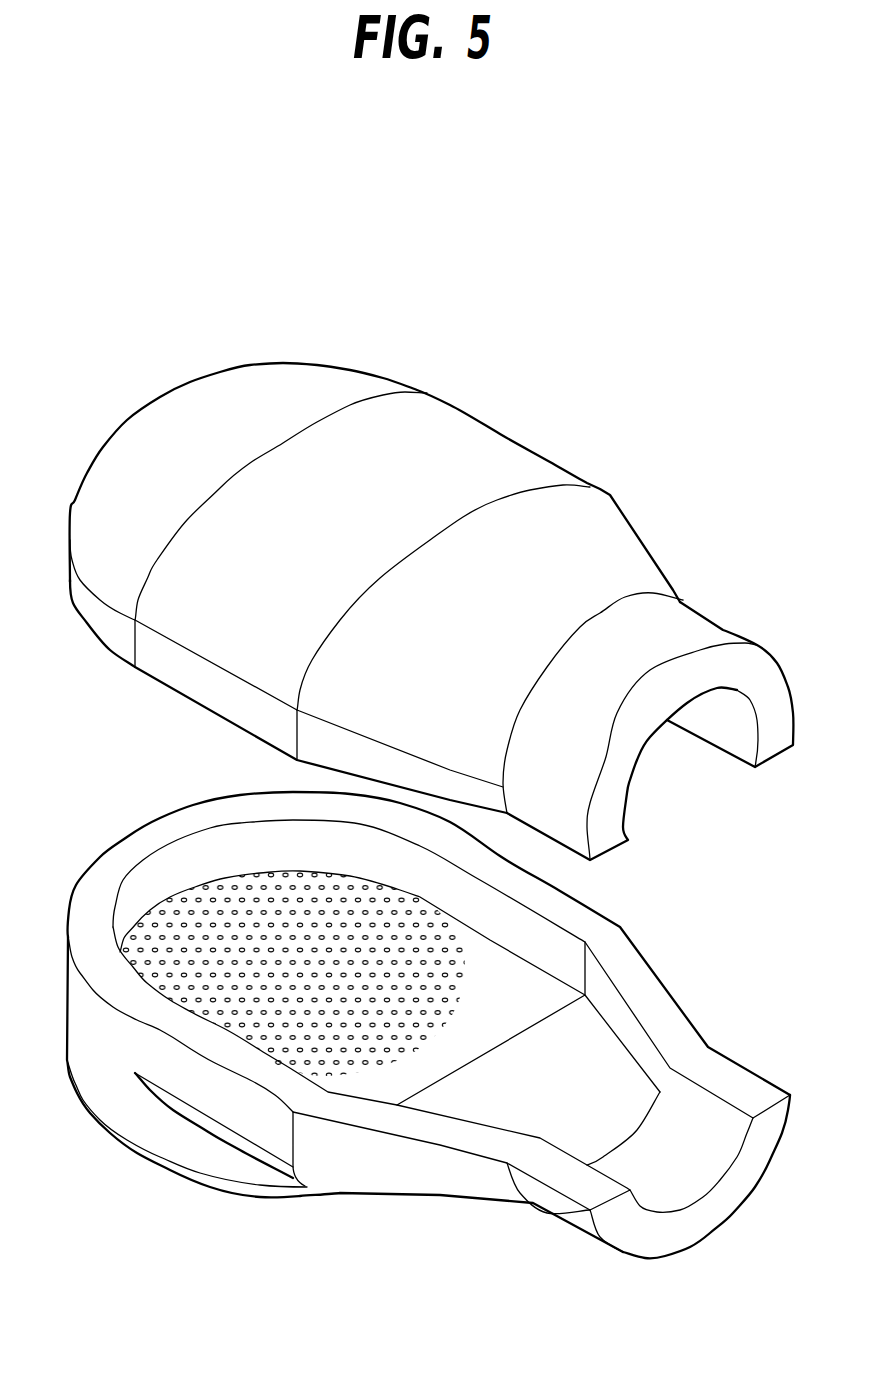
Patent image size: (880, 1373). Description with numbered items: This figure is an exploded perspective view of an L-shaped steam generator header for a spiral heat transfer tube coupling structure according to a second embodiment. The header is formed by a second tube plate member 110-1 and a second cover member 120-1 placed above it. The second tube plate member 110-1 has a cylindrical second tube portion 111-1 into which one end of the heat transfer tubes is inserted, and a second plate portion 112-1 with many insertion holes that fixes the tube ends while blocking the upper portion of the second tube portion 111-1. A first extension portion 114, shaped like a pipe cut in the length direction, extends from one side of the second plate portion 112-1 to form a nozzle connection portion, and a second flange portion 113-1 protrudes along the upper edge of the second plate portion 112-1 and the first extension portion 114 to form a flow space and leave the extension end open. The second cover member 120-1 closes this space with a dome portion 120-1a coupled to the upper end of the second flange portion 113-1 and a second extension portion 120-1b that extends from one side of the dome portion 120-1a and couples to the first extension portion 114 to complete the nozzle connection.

The second cover member 120-1 is at (432, 566).
The dome portion 120-1a is at (363, 380).
The second extension portion 120-1b is at (653, 615).
The second tube plate member 110-1 is at (406, 1071).
The second flange portion 113-1 is at (108, 887).
The second plate portion 112-1 is at (367, 1087).
The second tube portion 111-1 is at (227, 1190).
The first extension portion 114 is at (637, 1225).